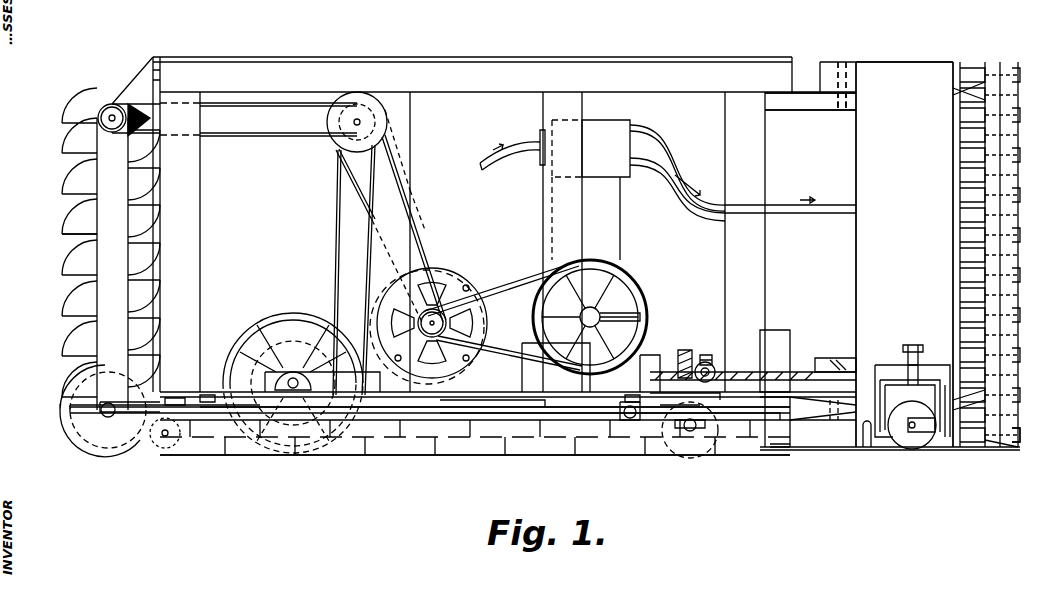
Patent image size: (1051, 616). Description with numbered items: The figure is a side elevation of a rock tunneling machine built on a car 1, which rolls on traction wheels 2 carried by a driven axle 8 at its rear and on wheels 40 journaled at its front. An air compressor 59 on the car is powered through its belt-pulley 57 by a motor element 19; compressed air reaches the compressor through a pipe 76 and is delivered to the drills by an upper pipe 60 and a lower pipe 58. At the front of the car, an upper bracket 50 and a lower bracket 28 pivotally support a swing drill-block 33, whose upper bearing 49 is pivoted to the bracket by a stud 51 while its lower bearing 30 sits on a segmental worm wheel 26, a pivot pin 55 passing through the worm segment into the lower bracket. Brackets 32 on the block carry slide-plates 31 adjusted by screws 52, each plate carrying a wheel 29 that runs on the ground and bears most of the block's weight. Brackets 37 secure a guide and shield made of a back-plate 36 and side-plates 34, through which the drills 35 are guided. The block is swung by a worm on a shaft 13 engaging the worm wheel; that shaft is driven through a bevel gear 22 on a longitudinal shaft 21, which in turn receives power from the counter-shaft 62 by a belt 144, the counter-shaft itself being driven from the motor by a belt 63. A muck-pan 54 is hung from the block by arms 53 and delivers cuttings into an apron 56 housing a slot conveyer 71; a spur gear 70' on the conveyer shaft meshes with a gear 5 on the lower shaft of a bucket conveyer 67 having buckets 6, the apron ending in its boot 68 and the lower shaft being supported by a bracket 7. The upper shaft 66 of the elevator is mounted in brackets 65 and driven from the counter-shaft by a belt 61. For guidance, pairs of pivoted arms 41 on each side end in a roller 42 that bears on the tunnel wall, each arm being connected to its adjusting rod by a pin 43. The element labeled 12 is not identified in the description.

The car 1 is at (230, 40).
The traction wheels 2 is at (325, 440).
The gear 5 is at (70, 407).
The buckets 6 is at (68, 175).
The bracket 7 is at (145, 410).
The driven axle 8 is at (296, 378).
The wheel rim 12 is at (285, 345).
The shaft 13 is at (714, 366).
The motor element 19 is at (463, 278).
The shaft 21 is at (520, 410).
The bevel gear 22 is at (690, 352).
The segmental worm wheel 26 is at (775, 376).
The lower bracket 28 is at (818, 405).
The wheel 29 is at (908, 440).
The lower bearing 30 is at (826, 354).
The slide-plate 31 is at (938, 408).
The brackets 32 is at (882, 372).
The drill-block 33 is at (912, 78).
The side-plates 34 is at (1000, 410).
The drills 35 is at (1015, 425).
The back-plate 36 is at (985, 420).
The brackets 37 is at (968, 80).
The wheels 40 is at (698, 450).
The arms 41 is at (425, 415).
The roller 42 is at (172, 398).
The pin 43 is at (208, 395).
The upper bearing 49 is at (842, 65).
The upper bracket 50 is at (810, 110).
The stud 51 is at (842, 112).
The screws 52 is at (914, 348).
The arms 53 is at (866, 446).
The muck-pan 54 is at (845, 450).
The pivot pin 55 is at (838, 408).
The apron 56 is at (628, 452).
The belt-pulley 57 is at (630, 312).
The lower pipe 58 is at (660, 180).
The air compressor 59 is at (600, 128).
The upper pipe 60 is at (645, 135).
The belt 61 is at (295, 100).
The counter-shaft 62 is at (360, 120).
The belt 63 is at (415, 215).
The brackets 65 is at (125, 75).
The shaft 66 is at (112, 115).
The bucket conveyer 67 is at (75, 238).
The boot 68 is at (68, 435).
The spur gear 70' is at (157, 451).
The slot conveyer 71 is at (498, 420).
The pipe 76 is at (515, 160).
The belt 144 is at (335, 262).